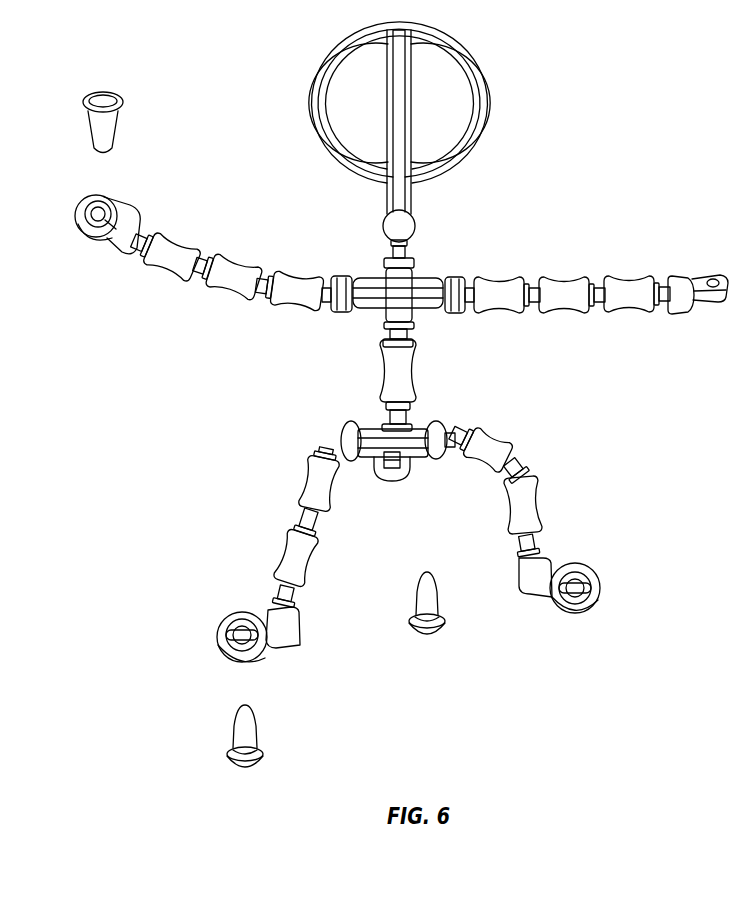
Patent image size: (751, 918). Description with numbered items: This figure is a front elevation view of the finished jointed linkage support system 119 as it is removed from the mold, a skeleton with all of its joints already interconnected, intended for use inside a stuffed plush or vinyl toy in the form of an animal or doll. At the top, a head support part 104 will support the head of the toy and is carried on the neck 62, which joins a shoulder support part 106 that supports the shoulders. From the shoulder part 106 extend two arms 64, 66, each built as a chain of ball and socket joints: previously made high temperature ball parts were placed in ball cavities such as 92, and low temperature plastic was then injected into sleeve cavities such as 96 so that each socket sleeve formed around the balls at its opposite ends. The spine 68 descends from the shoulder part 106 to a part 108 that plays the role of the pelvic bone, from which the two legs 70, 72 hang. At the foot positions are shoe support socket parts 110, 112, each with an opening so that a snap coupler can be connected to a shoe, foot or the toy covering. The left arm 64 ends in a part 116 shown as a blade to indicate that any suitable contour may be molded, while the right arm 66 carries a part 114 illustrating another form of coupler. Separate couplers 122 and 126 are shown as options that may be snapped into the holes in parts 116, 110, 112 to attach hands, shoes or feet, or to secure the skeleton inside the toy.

The neck 62 is at (414, 250).
The arm 64 is at (240, 257).
The arm 66 is at (659, 262).
The spine 68 is at (421, 379).
The leg 70 is at (293, 476).
The leg 72 is at (548, 486).
The ball cavity 92 is at (533, 279).
The socket sleeve cavity 96 is at (581, 277).
The head support part 104 is at (489, 120).
The shoulder support part 106 is at (441, 279).
The pelvic bone part 108 is at (414, 473).
The shoe support socket part 110 is at (258, 665).
The shoe support socket part 112 is at (578, 562).
The coupler 114 is at (688, 307).
The blade part 116 is at (124, 207).
The jointed linkage support system 119 is at (306, 267).
The coupler 122 is at (103, 92).
The coupler 126 is at (428, 643).